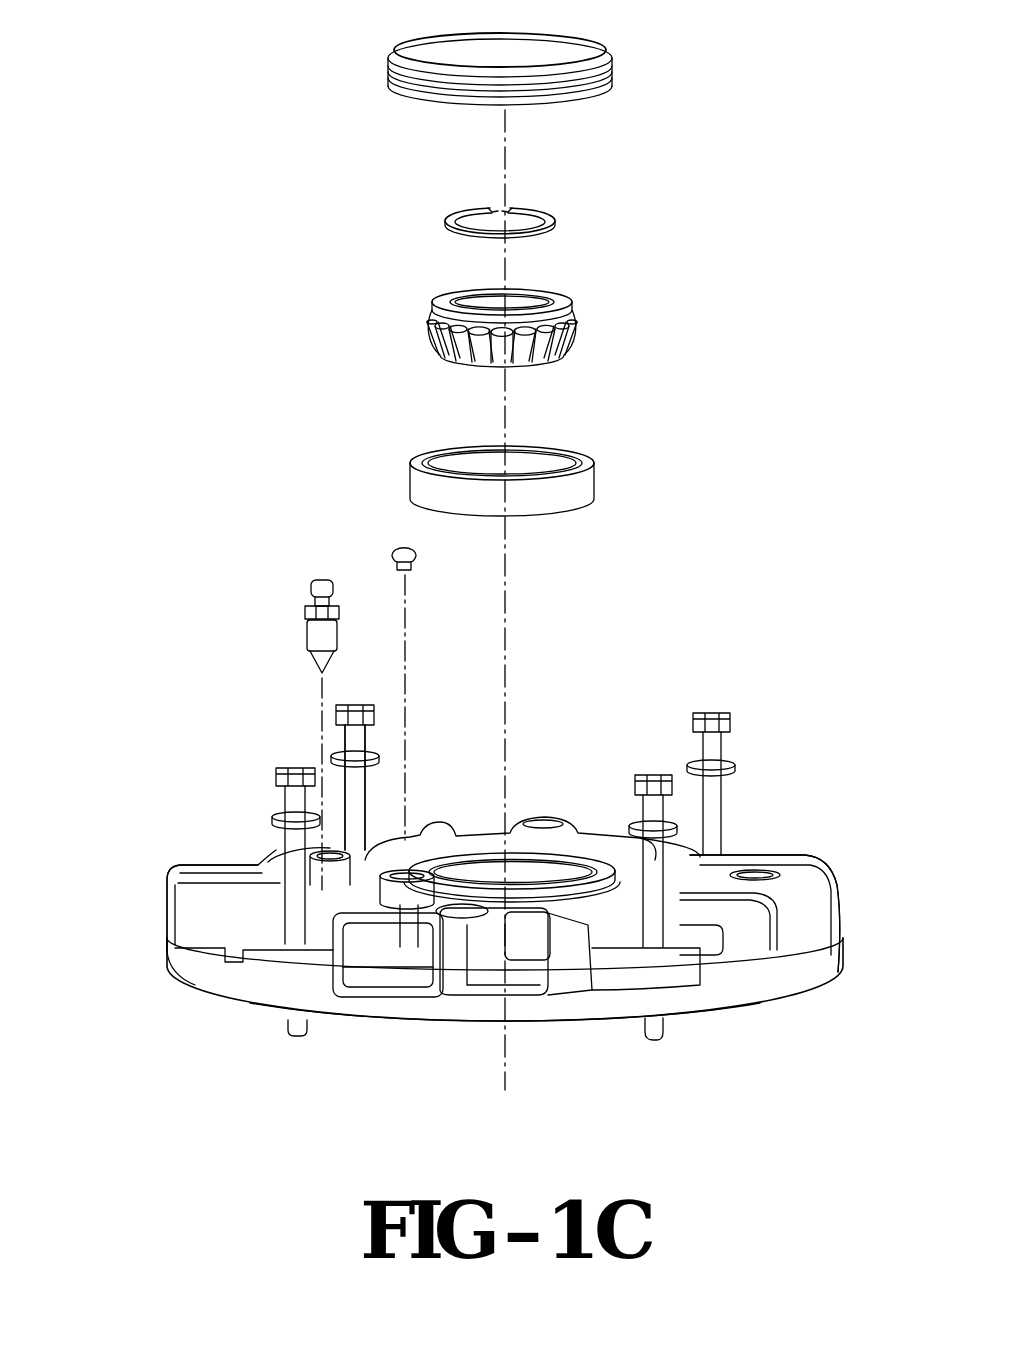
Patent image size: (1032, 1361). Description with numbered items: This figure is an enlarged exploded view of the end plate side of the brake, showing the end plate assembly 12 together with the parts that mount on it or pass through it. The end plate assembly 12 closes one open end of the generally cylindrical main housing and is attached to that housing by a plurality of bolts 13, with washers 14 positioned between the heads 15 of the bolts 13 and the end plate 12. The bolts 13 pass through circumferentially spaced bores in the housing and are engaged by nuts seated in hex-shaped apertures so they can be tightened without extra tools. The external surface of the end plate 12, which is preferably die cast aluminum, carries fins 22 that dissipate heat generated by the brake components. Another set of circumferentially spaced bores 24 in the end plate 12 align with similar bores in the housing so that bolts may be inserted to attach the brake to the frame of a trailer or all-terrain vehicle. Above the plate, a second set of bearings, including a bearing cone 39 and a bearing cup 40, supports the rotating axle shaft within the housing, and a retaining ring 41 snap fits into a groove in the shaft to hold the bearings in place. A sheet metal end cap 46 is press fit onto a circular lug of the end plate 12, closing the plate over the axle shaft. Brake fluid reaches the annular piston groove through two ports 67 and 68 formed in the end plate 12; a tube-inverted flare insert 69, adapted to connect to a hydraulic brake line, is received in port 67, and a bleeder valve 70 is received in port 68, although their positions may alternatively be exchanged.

The end plate assembly 12 is at (640, 785).
The bolts 13 is at (350, 745).
The washers 14 is at (357, 762).
The heads 15 is at (365, 707).
The fins 22 is at (210, 908).
The bores 24 is at (713, 712).
The bearing cone 39 is at (563, 298).
The bearing cup 40 is at (462, 455).
The retaining ring 41 is at (462, 215).
The end cap 46 is at (560, 45).
The port 67 is at (388, 866).
The port 68 is at (332, 852).
The tube-inverted flare insert 69 is at (398, 543).
The bleeder valve 70 is at (315, 582).